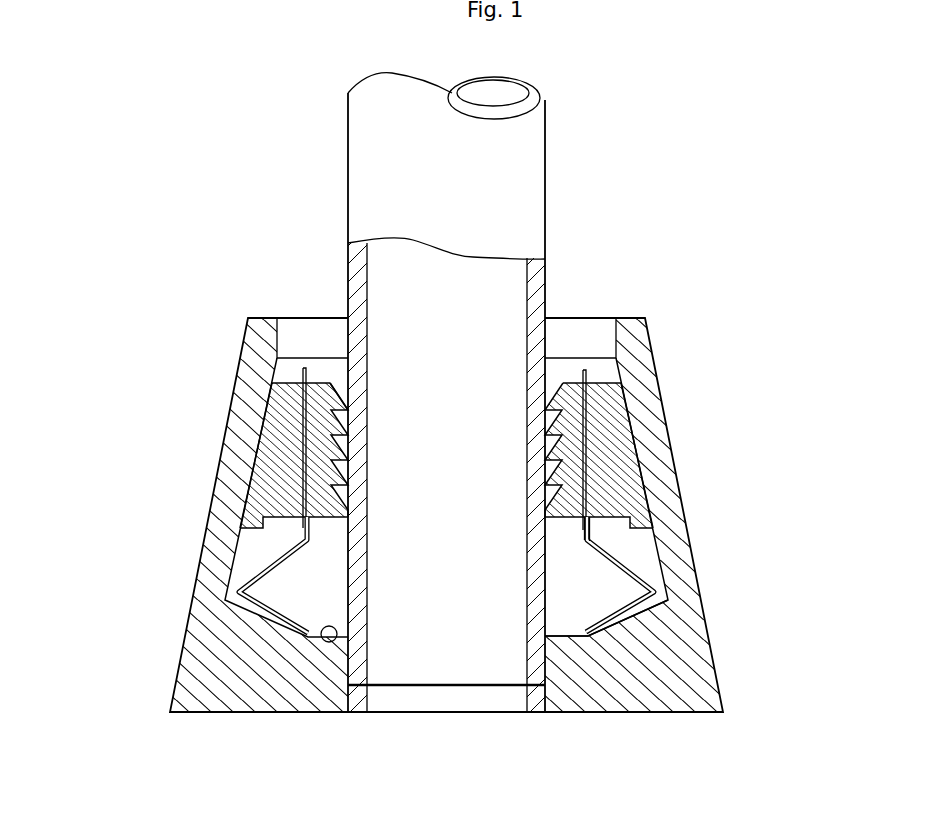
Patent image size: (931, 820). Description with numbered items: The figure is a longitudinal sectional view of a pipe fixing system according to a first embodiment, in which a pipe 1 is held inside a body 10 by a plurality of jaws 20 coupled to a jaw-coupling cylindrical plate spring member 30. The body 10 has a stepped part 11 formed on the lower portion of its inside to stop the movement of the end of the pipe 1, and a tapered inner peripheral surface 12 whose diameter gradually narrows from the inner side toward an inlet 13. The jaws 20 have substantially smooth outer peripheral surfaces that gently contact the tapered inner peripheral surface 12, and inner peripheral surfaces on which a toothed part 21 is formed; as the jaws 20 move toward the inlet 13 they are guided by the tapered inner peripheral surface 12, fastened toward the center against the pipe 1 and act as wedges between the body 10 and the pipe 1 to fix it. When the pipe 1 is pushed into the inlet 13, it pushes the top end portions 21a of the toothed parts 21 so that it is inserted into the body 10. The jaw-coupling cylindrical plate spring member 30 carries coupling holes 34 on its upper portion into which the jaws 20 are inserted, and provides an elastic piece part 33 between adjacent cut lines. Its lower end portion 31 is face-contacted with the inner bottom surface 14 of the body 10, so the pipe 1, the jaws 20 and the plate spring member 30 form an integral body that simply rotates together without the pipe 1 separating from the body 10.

The pipe 1 is at (533, 148).
The body 10 is at (216, 669).
The stepped part 11 is at (375, 690).
The tapered inner peripheral surface 12 is at (252, 522).
The inlet 13 is at (298, 333).
The inner bottom surface 14 is at (335, 650).
The jaws 20 is at (240, 372).
The toothed part 21 is at (330, 487).
The top end portion of the toothed part 21a is at (343, 372).
The jaw-coupling cylindrical plate spring member 30 is at (598, 370).
The lower end portion 31 is at (598, 640).
The elastic piece part 33 is at (656, 580).
The coupling holes 34 is at (603, 506).